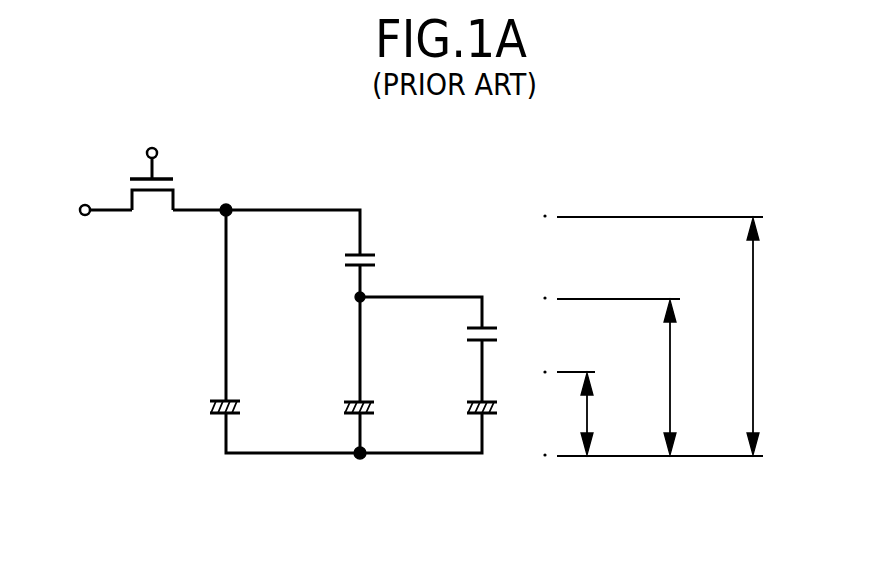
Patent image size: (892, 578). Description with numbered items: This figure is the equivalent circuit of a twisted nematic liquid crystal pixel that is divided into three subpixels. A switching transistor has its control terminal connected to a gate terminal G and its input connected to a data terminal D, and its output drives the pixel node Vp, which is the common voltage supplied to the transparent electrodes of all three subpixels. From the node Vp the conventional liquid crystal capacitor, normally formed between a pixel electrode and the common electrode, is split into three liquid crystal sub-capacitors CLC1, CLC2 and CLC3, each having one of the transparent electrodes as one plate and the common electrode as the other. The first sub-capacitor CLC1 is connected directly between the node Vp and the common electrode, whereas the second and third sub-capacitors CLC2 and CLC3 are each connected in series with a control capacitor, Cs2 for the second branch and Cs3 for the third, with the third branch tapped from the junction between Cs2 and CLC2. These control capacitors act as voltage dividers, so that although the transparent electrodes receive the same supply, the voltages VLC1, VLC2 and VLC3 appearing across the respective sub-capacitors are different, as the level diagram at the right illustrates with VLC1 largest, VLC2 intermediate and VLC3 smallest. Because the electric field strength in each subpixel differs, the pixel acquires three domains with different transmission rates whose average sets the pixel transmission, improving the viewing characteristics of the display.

The data line terminal D is at (95, 207).
The gate line terminal G is at (151, 149).
The pixel electrode voltage node Vp is at (262, 197).
The control capacitor Cs2 is at (333, 264).
The control capacitor Cs3 is at (453, 339).
The liquid crystal sub-capacitor CLC1 is at (190, 401).
The liquid crystal sub-capacitor CLC2 is at (329, 401).
The liquid crystal sub-capacitor CLC3 is at (449, 401).
The voltage applied across sub-capacitor CLC1 VLC1 is at (783, 336).
The voltage applied across sub-capacitor CLC2 VLC2 is at (700, 377).
The voltage applied across sub-capacitor CLC3 VLC3 is at (616, 414).